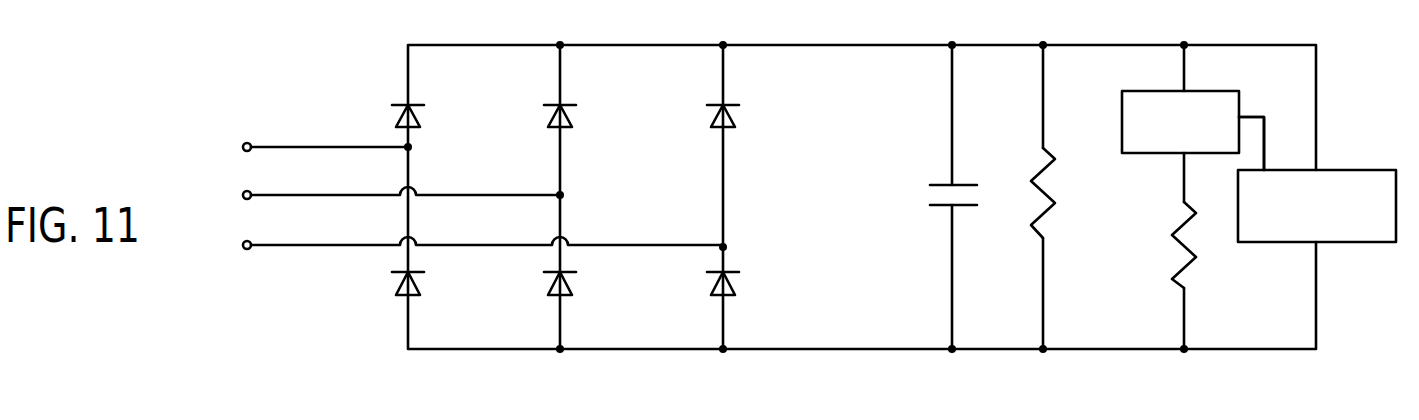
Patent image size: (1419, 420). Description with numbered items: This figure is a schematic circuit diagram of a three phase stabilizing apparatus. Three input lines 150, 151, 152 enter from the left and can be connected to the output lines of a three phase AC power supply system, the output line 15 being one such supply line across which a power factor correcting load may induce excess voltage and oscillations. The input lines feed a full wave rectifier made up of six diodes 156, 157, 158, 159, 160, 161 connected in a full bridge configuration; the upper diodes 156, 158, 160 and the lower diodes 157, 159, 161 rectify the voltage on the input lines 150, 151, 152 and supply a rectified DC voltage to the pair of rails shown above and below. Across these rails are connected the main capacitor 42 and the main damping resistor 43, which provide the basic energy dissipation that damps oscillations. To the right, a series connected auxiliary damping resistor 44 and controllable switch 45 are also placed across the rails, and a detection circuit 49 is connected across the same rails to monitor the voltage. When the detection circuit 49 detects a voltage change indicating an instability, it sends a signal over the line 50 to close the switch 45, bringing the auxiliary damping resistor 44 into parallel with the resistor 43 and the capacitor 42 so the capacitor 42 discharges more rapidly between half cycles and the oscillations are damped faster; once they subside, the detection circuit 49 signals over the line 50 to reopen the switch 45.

The output line 15 is at (606, 42).
The main capacitor 42 is at (932, 208).
The main damping resistor 43 is at (1052, 205).
The auxiliary damping resistor 44 is at (1163, 236).
The controllable switch 45 is at (1120, 112).
The detection circuit 49 is at (1272, 243).
The line 50 is at (1243, 112).
The input line 150 is at (335, 145).
The input line 151 is at (328, 193).
The input line 152 is at (338, 243).
The diode 156 is at (420, 123).
The diode 157 is at (420, 291).
The diode 158 is at (572, 123).
The diode 159 is at (572, 291).
The diode 160 is at (735, 122).
The diode 161 is at (735, 291).